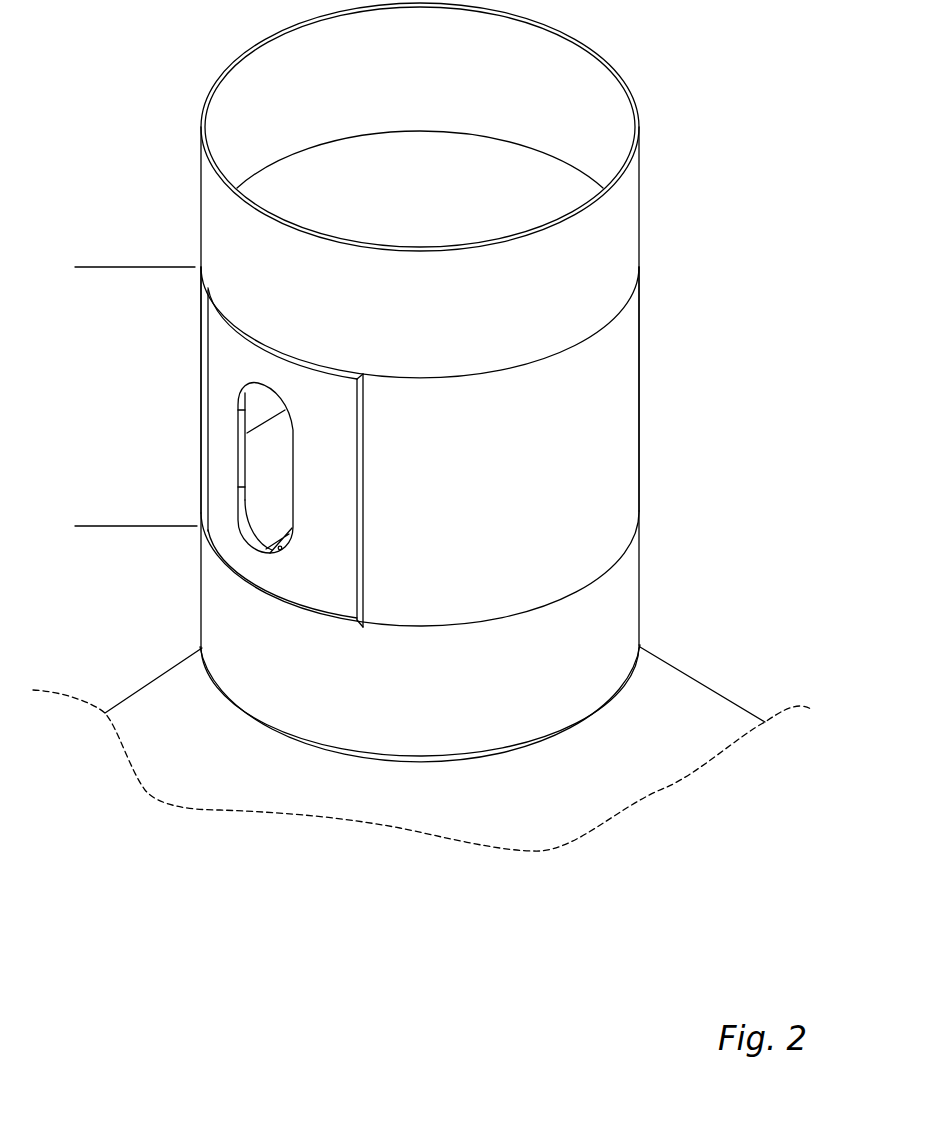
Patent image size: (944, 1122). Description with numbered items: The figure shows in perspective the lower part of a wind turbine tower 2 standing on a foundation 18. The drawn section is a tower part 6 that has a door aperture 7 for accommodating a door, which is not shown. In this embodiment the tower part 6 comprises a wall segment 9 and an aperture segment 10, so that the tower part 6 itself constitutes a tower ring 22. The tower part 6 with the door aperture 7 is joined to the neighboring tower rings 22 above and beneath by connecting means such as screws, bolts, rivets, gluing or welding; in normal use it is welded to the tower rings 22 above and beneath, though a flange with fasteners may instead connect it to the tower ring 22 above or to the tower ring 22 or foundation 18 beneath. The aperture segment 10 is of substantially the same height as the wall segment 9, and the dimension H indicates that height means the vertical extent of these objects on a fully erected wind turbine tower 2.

The wind turbine tower 2 is at (667, 174).
The tower part 6 is at (668, 334).
The door aperture 7 is at (243, 448).
The wall segment 9 is at (602, 443).
The aperture segment 10 is at (222, 513).
The foundation 18 is at (711, 659).
The tower ring 22 is at (220, 235).
The dimension H is at (88, 279).